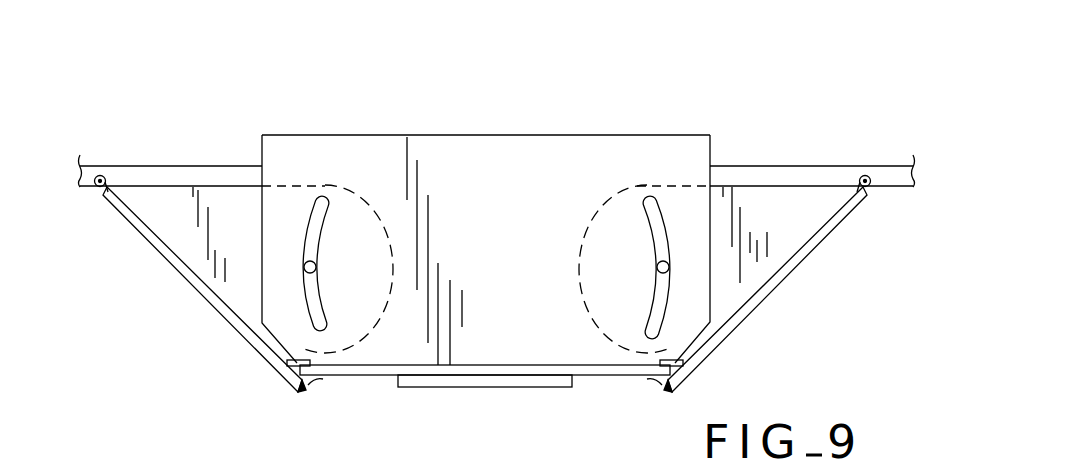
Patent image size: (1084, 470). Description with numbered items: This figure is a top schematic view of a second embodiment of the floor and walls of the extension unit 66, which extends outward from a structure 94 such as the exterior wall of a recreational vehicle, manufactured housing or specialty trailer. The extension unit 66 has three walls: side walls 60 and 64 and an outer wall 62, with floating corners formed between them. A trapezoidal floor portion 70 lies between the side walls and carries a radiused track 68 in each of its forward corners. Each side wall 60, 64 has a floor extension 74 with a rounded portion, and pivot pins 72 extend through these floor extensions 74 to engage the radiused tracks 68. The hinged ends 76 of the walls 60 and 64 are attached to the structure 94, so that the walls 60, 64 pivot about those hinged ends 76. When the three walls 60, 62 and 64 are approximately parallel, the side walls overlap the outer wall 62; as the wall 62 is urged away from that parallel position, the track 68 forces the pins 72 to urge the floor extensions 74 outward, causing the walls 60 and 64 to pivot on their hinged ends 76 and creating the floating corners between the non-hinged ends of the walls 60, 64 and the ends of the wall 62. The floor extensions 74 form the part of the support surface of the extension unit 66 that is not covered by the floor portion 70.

The wall 60 is at (228, 313).
The wall 62 is at (632, 375).
The wall 64 is at (780, 273).
The extension unit 66 is at (718, 100).
The radiused track 68 is at (325, 200).
The floor portion 70 is at (476, 147).
The pivot pins 72 is at (304, 265).
The floor extensions 74 is at (178, 203).
The hinged ends 76 is at (109, 176).
The structure 94 is at (208, 170).